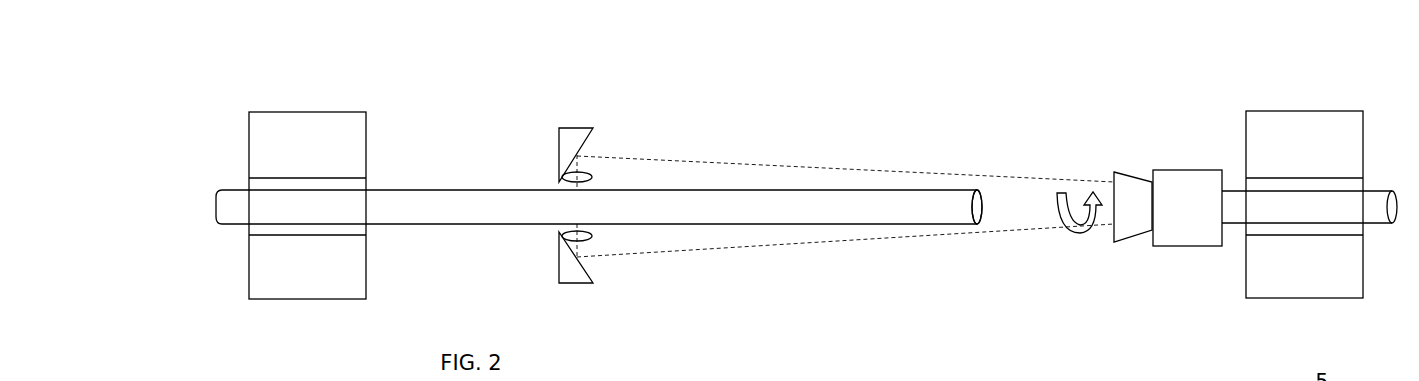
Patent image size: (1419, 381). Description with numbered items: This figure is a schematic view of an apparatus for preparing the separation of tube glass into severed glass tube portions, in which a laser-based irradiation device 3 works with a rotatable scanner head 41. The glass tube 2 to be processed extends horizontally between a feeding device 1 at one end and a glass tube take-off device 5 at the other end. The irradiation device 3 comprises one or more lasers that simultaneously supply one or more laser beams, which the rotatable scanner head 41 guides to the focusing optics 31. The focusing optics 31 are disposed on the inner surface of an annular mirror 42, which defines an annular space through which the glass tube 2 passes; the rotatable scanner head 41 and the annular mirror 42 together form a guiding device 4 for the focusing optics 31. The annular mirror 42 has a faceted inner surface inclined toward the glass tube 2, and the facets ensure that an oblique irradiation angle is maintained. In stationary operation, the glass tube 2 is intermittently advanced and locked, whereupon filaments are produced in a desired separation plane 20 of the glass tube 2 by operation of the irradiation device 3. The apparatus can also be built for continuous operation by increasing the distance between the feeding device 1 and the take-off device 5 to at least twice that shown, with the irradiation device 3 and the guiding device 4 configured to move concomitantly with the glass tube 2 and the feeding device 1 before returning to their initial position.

The feeding device 1 is at (249, 156).
The glass tube 2 is at (762, 224).
The laser-based irradiation device 3 is at (1190, 157).
The guiding device 4 is at (814, 193).
The glass tube take-off device 5 is at (1303, 111).
The separation plane 20 is at (977, 207).
The focusing optics 31 is at (588, 172).
The rotatable scanner head 41 is at (1137, 173).
The annular mirror 42 is at (574, 128).